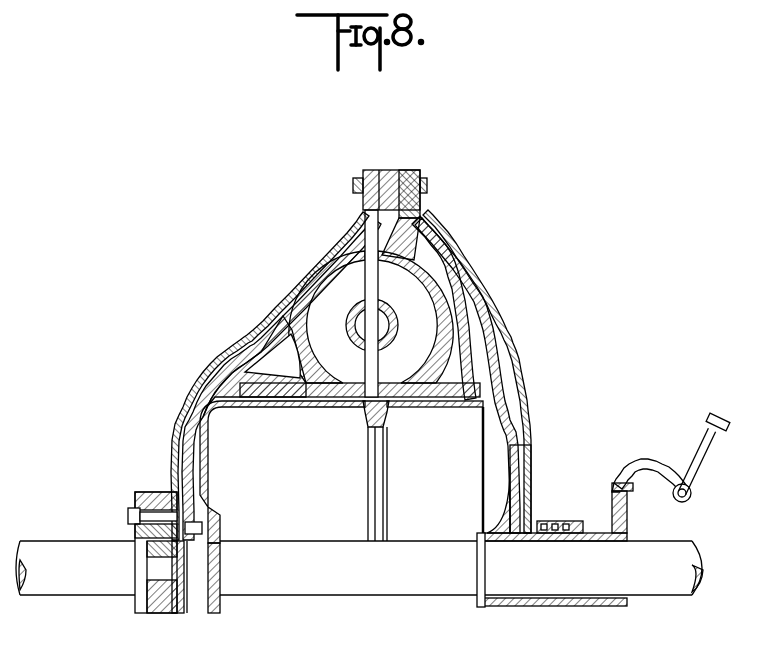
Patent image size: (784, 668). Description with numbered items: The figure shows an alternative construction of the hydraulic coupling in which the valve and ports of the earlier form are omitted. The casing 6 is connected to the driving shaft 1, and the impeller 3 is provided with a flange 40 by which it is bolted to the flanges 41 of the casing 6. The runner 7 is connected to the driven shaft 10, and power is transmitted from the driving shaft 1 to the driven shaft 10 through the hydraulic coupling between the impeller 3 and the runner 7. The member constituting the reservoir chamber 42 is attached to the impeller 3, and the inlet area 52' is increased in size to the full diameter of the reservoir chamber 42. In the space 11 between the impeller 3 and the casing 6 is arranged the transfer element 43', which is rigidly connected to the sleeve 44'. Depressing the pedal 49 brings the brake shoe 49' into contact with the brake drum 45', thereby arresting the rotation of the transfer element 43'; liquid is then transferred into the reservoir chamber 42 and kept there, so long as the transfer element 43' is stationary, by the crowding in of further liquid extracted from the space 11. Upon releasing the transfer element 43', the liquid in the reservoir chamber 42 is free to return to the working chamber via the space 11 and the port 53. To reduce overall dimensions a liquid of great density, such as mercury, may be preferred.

The driving shaft 1 is at (72, 547).
The impeller 3 is at (445, 322).
The casing 6 is at (278, 294).
The runner 7 is at (361, 325).
The driven shaft 10 is at (670, 590).
The space 11 is at (485, 303).
The flange 40 is at (405, 170).
The flanges 41 is at (369, 171).
The reservoir chamber 42 is at (226, 408).
The transfer element 43' is at (527, 465).
The sleeve 44' is at (552, 564).
The brake drum 45' is at (639, 528).
The pedal 49 is at (720, 452).
The brake shoe 49' is at (651, 464).
The inlet area 52' is at (433, 471).
The port 53 is at (385, 222).